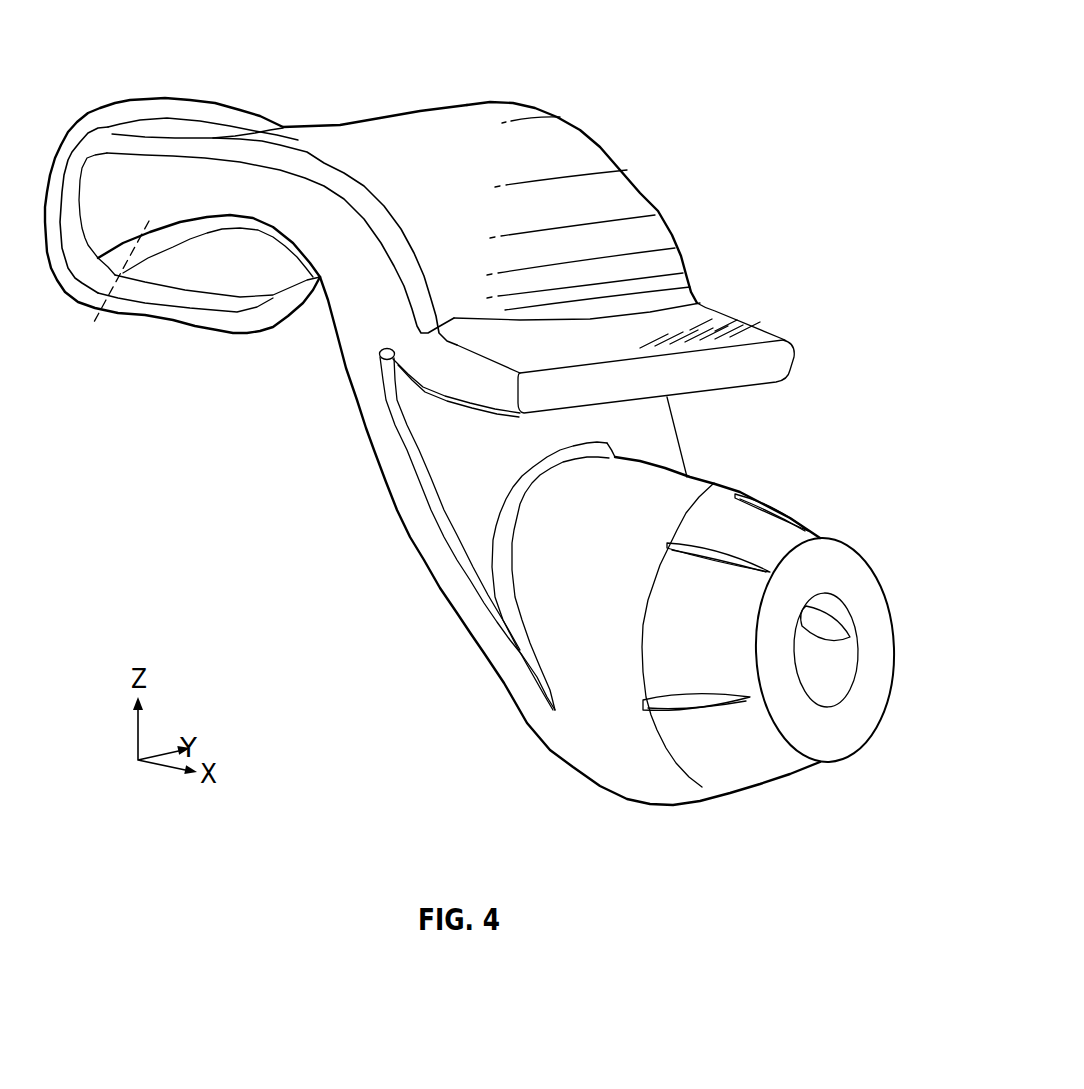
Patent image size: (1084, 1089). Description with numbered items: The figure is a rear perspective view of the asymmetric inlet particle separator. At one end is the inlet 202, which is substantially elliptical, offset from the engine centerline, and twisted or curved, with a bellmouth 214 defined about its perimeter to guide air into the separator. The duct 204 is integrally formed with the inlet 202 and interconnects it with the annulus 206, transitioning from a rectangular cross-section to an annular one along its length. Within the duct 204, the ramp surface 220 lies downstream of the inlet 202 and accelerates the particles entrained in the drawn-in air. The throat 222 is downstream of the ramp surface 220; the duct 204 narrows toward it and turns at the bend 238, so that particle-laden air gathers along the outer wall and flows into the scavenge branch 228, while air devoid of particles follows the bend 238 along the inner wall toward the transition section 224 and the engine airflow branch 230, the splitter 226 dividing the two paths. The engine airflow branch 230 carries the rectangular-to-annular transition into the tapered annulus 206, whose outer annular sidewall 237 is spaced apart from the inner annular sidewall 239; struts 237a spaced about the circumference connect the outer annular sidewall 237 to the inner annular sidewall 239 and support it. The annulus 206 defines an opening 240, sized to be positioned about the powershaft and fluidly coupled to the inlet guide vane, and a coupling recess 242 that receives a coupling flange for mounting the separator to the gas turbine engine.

The inlet 202 is at (143, 70).
The bellmouth 214 is at (86, 114).
The throat 222 is at (307, 170).
The duct 204 is at (519, 80).
The transition section 224 is at (669, 201).
The scavenge branch 228 is at (805, 338).
The splitter 226 is at (379, 360).
The engine airflow branch 230 is at (366, 546).
The annulus 206 is at (881, 507).
The opening 240 is at (847, 693).
The inner annular sidewall 239 is at (838, 663).
The coupling recess 242 is at (833, 627).
The outer annular sidewall 237 is at (834, 523).
The struts 237a is at (767, 493).
The ramp surface 220 is at (111, 292).
The bend 238 is at (210, 273).